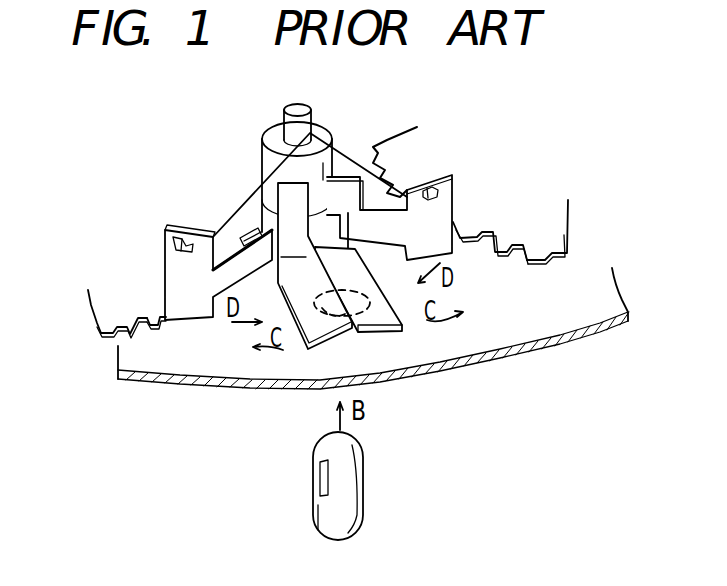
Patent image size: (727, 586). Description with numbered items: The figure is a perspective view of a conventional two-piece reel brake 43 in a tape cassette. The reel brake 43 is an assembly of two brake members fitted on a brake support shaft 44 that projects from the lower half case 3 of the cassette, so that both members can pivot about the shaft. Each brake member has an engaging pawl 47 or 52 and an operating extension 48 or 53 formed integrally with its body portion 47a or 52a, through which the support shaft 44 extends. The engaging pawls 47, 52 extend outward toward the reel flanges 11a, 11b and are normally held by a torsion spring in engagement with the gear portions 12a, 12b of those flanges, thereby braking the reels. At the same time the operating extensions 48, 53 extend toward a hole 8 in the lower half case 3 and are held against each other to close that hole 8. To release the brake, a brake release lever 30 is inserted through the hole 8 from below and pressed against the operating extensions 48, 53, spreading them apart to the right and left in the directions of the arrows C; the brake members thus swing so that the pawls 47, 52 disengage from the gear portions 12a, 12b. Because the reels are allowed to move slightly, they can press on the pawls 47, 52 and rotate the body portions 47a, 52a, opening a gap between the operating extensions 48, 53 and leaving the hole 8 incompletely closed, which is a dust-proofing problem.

The lower half case 3 is at (562, 310).
The hole 8 is at (333, 350).
The flange 11a is at (107, 307).
The flange 11b is at (522, 218).
The gear portion 12a is at (157, 320).
The gear portion 12b is at (543, 252).
The brake release lever 30 is at (350, 477).
The reel brake 43 is at (270, 129).
The brake support shaft 44 is at (302, 108).
The engaging pawl 47 is at (173, 282).
The body portion 47a is at (258, 226).
The operating extension 48 is at (387, 313).
The engaging pawl 52 is at (440, 215).
The body portion 52a is at (347, 167).
The operating extension 53 is at (293, 270).